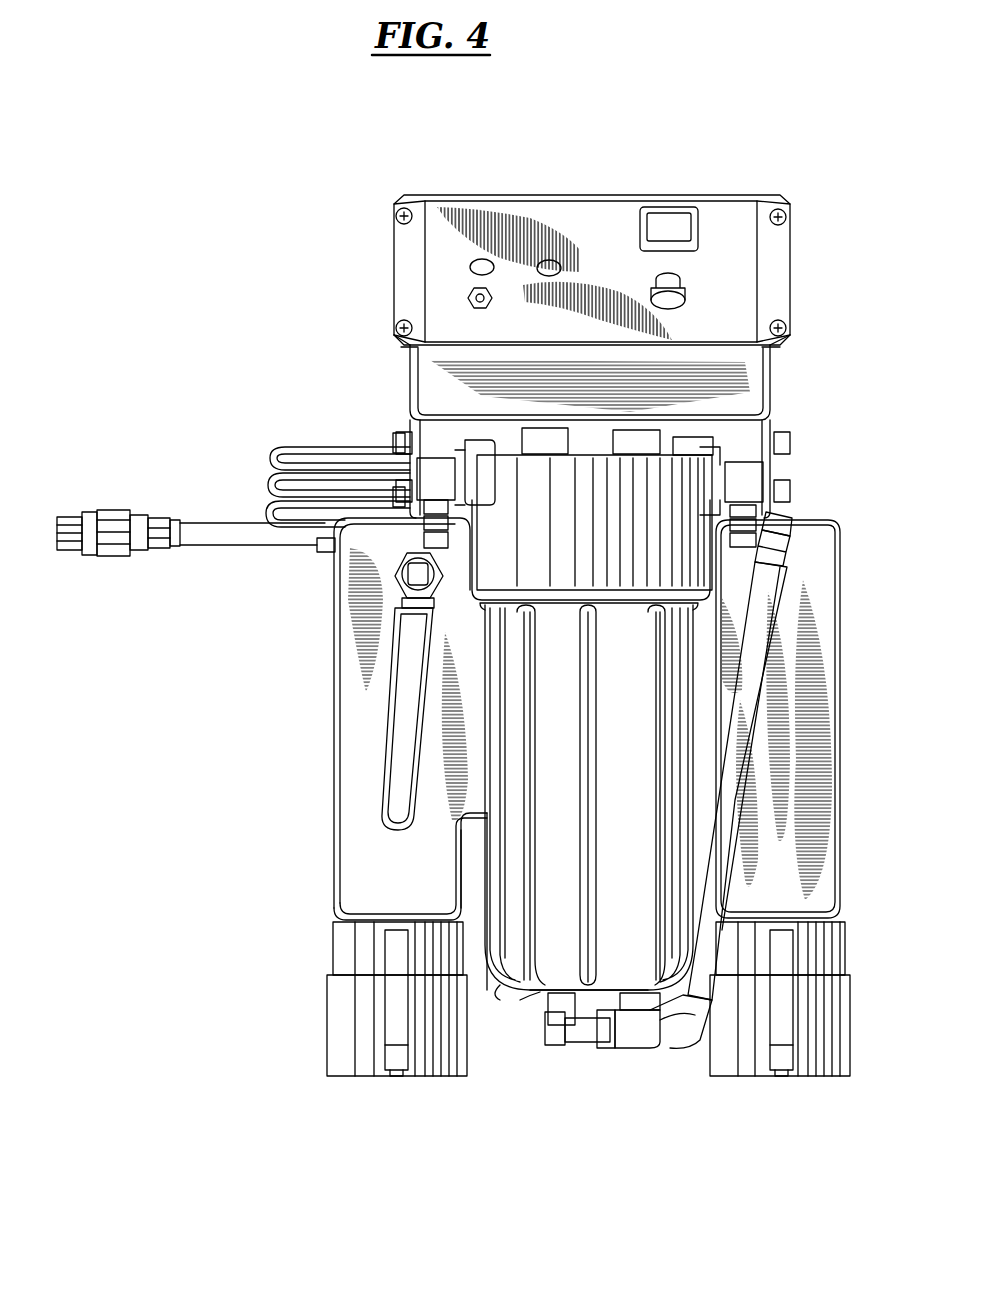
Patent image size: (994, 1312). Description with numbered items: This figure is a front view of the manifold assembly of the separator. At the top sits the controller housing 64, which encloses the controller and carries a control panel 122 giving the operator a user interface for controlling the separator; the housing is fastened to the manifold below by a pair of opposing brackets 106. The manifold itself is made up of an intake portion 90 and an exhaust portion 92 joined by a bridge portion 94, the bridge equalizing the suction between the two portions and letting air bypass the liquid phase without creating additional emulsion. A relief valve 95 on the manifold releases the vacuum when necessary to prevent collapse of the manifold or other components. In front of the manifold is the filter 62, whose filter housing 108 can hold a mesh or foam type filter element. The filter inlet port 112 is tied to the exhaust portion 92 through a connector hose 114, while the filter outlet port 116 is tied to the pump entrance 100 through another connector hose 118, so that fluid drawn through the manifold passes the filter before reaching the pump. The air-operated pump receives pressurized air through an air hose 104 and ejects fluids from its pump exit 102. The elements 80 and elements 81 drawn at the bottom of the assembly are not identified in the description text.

The control panel 122 is at (585, 222).
The mounting screws 106 is at (405, 368).
The bracket 64 is at (762, 385).
The manifold 116 is at (748, 470).
The fitting 112 is at (445, 480).
The tubing 104 is at (315, 446).
The electrical connector 94 is at (383, 530).
The housing 92 is at (355, 778).
The nut 95 is at (442, 576).
The handle 114 is at (408, 708).
The recess 108 is at (490, 780).
The filter bowl 90 is at (710, 847).
The filter 62 is at (505, 995).
The tube 118 is at (757, 583).
The drain valve 102 is at (590, 1048).
The outlet fitting 100 is at (688, 1035).
The foot 80 is at (345, 1020).
The pad 81 is at (400, 1030).